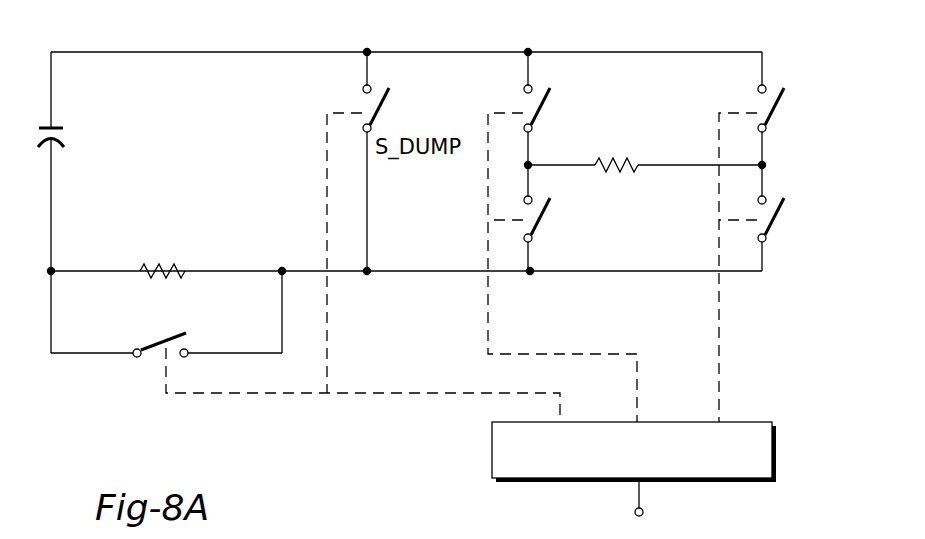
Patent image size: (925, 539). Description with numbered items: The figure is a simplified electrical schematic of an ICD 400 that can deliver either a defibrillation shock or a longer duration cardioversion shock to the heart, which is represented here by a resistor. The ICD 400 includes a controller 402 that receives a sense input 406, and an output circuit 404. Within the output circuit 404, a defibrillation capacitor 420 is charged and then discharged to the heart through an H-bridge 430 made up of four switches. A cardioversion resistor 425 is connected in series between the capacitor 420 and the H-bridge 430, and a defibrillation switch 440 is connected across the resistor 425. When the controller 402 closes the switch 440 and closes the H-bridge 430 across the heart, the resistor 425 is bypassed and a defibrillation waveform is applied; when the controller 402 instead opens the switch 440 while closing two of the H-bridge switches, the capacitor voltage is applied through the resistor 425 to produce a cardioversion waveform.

The ICD 400 is at (407, 410).
The controller 402 is at (768, 396).
The output circuit 404 is at (209, 44).
The sense input 406 is at (706, 501).
The defibrillation capacitor 420 is at (60, 125).
The cardioversion resistor 425 is at (183, 276).
The H-bridge 430 is at (760, 45).
The defibrillation switch 440 is at (150, 358).